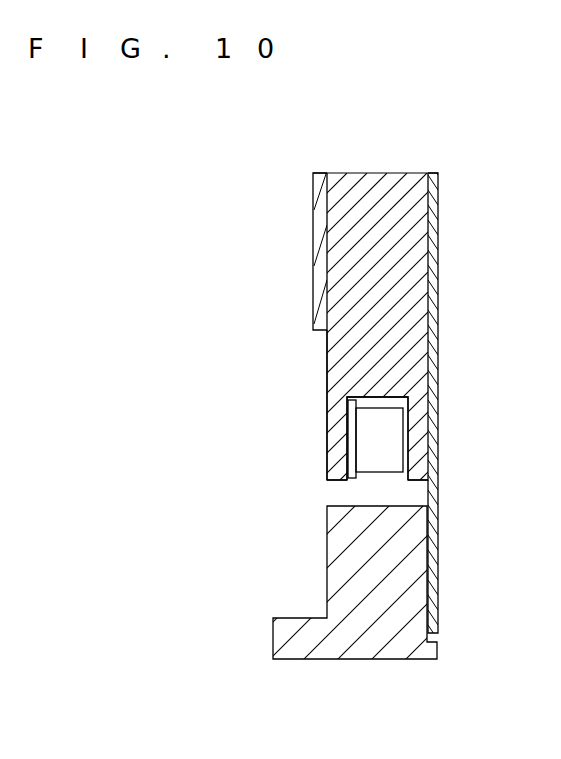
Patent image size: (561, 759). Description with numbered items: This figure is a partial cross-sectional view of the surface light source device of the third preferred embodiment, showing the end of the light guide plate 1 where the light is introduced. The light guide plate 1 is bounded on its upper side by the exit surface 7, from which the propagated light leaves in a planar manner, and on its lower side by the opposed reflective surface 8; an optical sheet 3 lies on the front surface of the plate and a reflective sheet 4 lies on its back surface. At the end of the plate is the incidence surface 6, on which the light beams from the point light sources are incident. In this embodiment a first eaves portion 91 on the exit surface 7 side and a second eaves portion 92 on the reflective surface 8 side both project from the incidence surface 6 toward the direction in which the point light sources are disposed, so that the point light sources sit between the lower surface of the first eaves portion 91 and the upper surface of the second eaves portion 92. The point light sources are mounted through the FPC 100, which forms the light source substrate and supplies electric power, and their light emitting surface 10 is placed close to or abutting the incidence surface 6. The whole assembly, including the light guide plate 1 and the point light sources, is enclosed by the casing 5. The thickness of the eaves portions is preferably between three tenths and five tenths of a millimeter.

The light guide plate 1 is at (418, 221).
The optical sheet 3 is at (322, 234).
The reflective sheet 4 is at (431, 272).
The casing 5 is at (412, 561).
The incidence surface 6 is at (400, 393).
The exit surface 7 is at (327, 338).
The reflective surface 8 is at (433, 314).
The light emitting surface 10 is at (373, 406).
The first eaves portion 91 is at (333, 422).
The second eaves portion 92 is at (420, 431).
The FPC 100 is at (353, 451).